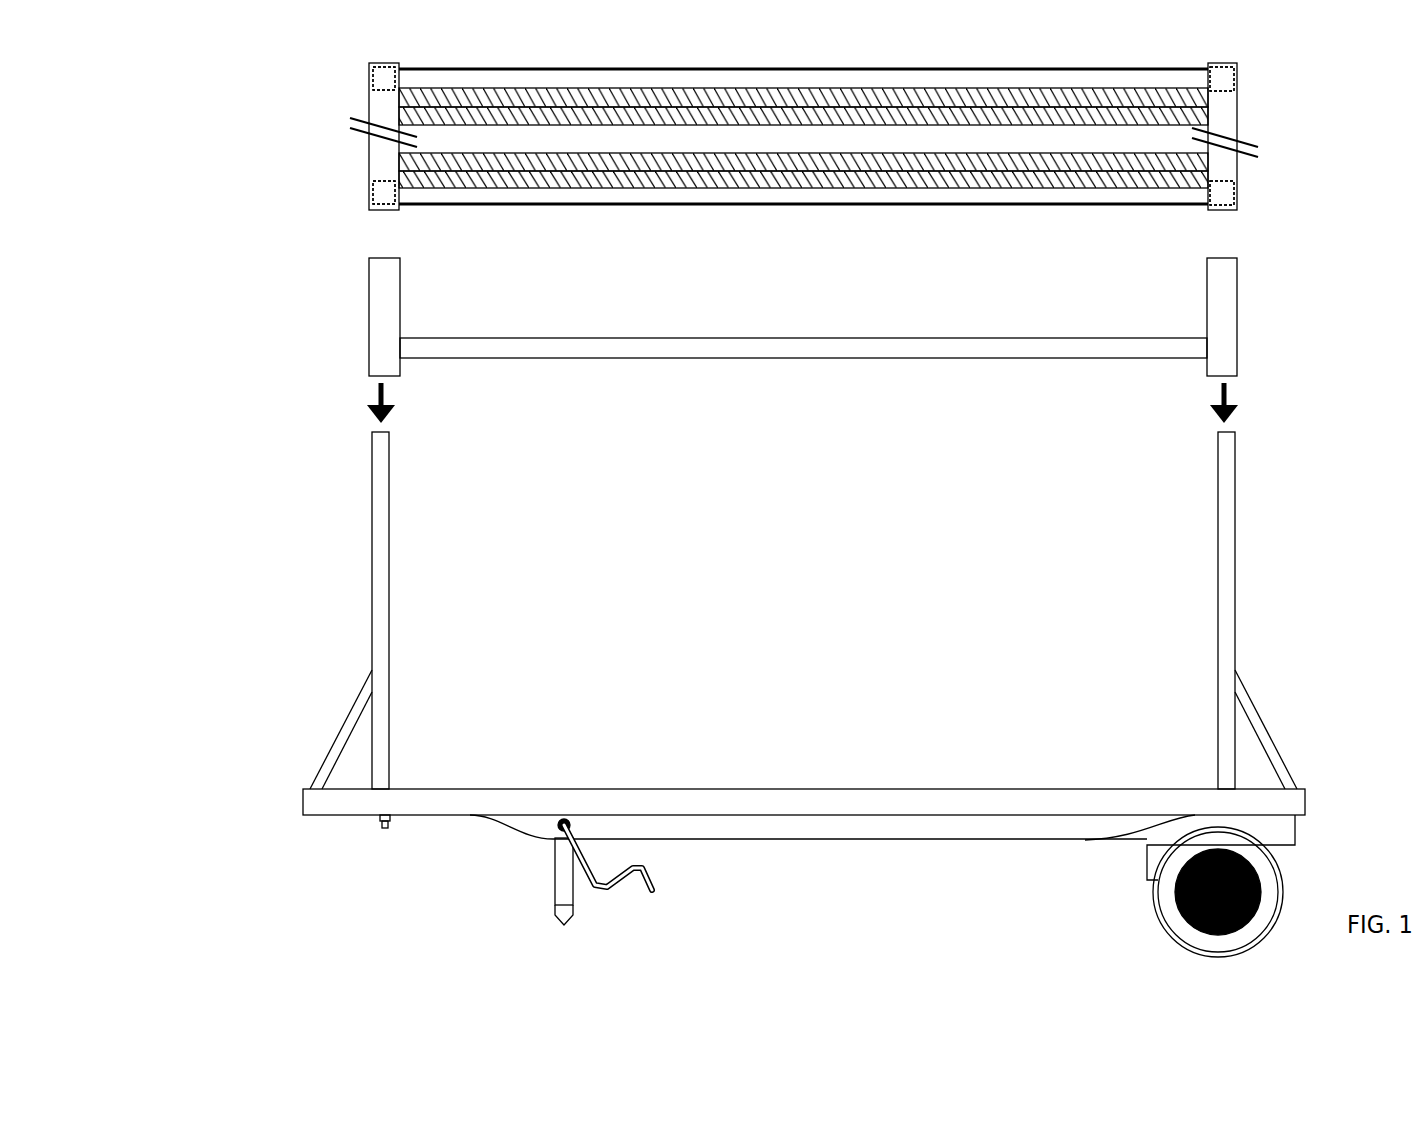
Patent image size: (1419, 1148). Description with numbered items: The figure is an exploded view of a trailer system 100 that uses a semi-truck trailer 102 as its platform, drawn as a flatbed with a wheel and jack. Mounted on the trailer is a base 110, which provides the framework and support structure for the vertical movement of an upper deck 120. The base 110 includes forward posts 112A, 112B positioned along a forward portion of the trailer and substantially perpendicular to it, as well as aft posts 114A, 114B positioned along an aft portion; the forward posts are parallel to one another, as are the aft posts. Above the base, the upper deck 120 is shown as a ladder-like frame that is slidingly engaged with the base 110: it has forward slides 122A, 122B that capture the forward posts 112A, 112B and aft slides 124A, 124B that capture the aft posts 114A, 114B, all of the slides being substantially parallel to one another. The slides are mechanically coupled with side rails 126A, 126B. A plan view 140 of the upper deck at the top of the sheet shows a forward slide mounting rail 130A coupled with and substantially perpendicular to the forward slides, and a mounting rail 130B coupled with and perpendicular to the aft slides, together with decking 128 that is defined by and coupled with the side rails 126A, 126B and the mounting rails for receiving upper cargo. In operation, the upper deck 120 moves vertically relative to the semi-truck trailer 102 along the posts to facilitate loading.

The trailer system 100 is at (1333, 265).
The semi-truck trailer 102 is at (221, 789).
The base 110 is at (221, 432).
The forward post 112A is at (376, 186).
The forward post 112B is at (375, 89).
The aft post 114A is at (1232, 186).
The aft post 114B is at (1232, 89).
The upper deck 120 is at (221, 258).
The forward slide 122A is at (370, 208).
The forward slide 122B is at (370, 68).
The aft slide 124A is at (1237, 208).
The aft slide 124B is at (1237, 68).
The side rail 126A is at (793, 203).
The side rail 126B is at (787, 69).
The decking 128 is at (972, 182).
The forward slide mounting rail 130A is at (372, 150).
The mounting rail 130B is at (1237, 126).
The plan view 140 is at (221, 63).